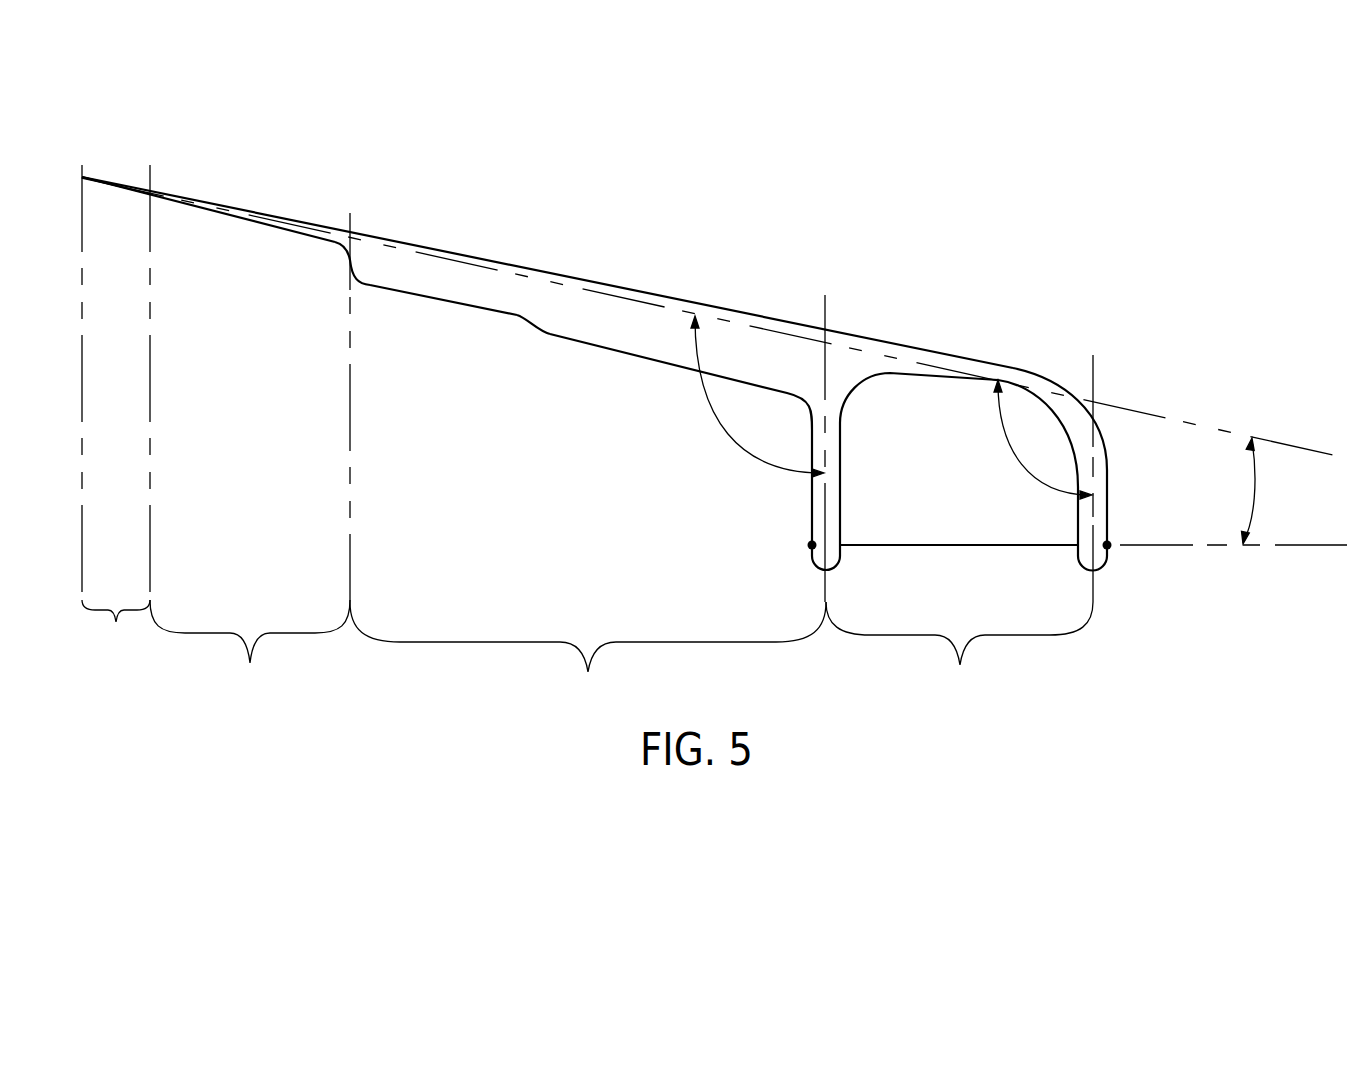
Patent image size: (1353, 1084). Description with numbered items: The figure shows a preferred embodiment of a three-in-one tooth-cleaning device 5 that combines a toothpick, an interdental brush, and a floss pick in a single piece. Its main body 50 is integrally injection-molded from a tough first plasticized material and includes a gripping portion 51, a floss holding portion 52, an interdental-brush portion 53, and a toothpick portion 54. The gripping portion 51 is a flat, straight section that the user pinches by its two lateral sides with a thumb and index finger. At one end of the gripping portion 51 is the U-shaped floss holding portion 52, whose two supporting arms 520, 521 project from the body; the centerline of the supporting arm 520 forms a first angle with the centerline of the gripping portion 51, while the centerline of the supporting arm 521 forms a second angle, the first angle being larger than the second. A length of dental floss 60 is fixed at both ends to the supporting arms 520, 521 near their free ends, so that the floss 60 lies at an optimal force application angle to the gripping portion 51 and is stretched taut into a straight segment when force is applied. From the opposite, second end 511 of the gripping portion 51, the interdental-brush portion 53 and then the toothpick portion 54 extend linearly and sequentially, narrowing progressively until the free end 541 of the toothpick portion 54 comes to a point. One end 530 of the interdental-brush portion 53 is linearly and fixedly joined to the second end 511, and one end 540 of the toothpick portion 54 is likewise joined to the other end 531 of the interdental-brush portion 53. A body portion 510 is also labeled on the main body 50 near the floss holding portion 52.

The three-in-one tooth-cleaning device 5 is at (1028, 202).
The main body 50 is at (656, 283).
The gripping portion 51 is at (588, 496).
The floss holding portion 52 is at (959, 525).
The interdental-brush portion 53 is at (250, 648).
The toothpick portion 54 is at (116, 627).
The body portion 510 is at (808, 365).
The second end of the gripping portion 511 is at (355, 258).
The supporting arm 520 is at (1110, 574).
The supporting arm 521 is at (803, 516).
The end of the interdental-brush portion 530 is at (350, 260).
The other end of the interdental-brush portion 531 is at (152, 189).
The end of the toothpick portion 540 is at (150, 192).
The free end of the toothpick portion 541 is at (82, 177).
The dental floss 60 is at (944, 562).